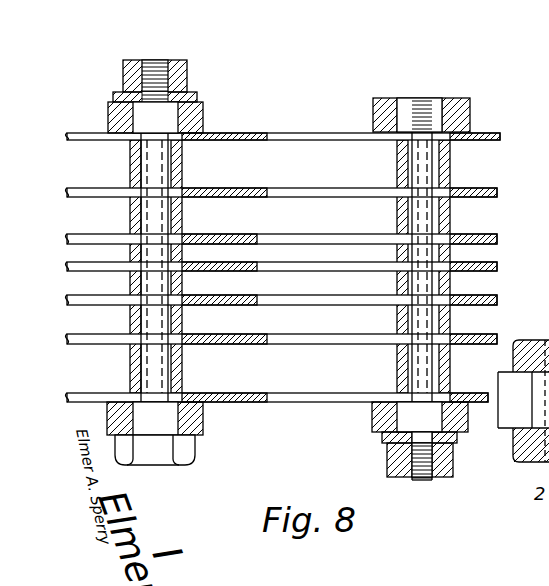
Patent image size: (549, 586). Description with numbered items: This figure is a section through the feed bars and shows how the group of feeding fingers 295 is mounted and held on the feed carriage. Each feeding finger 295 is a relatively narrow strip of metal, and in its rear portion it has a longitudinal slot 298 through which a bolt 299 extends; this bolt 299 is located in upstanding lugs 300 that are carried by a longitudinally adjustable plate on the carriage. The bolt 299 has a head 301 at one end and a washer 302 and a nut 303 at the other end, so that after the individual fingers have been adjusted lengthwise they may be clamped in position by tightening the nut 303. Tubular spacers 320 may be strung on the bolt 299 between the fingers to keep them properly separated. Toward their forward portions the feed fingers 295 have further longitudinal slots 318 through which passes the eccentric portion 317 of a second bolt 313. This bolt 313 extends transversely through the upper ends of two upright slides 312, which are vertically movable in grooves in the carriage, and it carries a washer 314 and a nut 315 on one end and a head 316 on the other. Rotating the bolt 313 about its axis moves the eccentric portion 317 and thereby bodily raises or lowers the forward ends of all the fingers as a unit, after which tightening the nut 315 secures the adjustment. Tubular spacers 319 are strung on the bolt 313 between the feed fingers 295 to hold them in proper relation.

The feeding finger 295 is at (265, 346).
The longitudinal slot 298 is at (97, 340).
The bolt 299 is at (158, 368).
The upstanding lug 300 is at (204, 123).
The head 301 is at (160, 458).
The washer 302 is at (194, 94).
The nut 303 is at (167, 62).
The upright slide 312 is at (472, 115).
The bolt 313 is at (419, 478).
The washer 314 is at (382, 436).
The nut 315 is at (388, 461).
The head 316 is at (420, 118).
The eccentric portion 317 is at (425, 173).
The slot 318 is at (352, 192).
The tubular spacer 319 is at (452, 218).
The spacer 320 is at (183, 222).